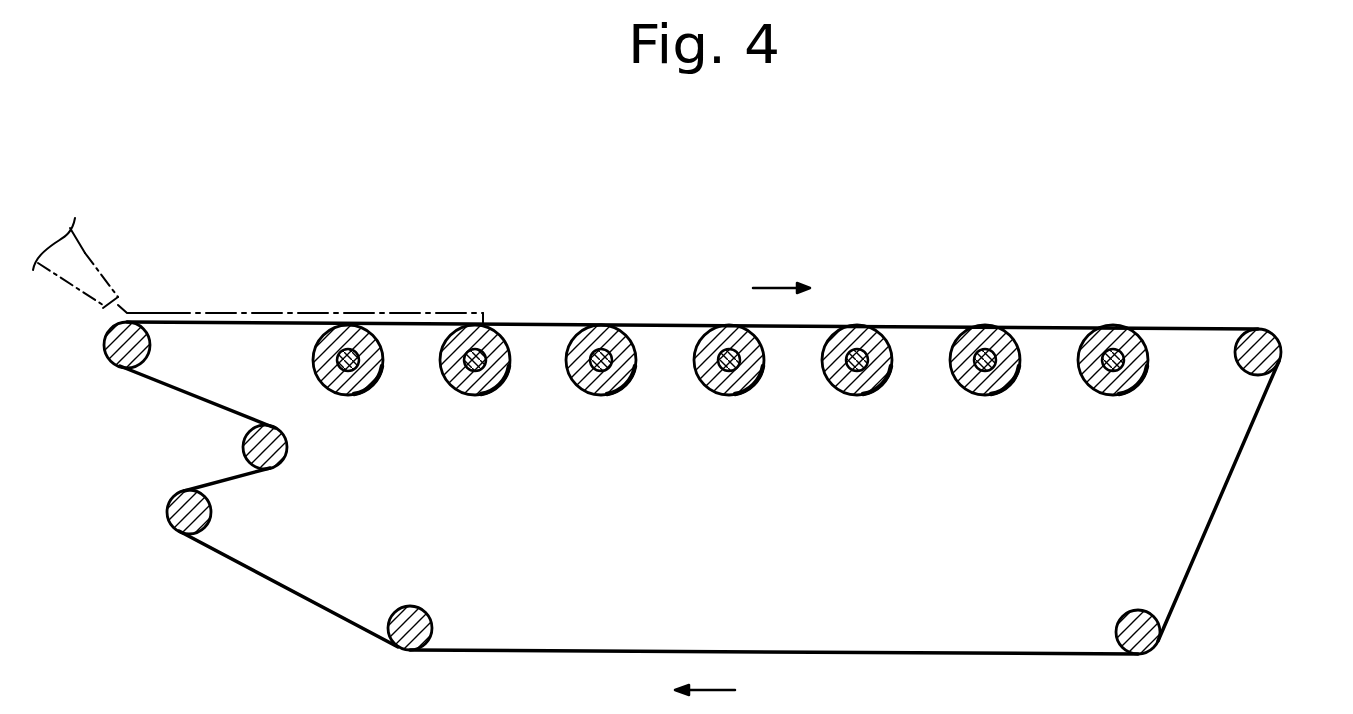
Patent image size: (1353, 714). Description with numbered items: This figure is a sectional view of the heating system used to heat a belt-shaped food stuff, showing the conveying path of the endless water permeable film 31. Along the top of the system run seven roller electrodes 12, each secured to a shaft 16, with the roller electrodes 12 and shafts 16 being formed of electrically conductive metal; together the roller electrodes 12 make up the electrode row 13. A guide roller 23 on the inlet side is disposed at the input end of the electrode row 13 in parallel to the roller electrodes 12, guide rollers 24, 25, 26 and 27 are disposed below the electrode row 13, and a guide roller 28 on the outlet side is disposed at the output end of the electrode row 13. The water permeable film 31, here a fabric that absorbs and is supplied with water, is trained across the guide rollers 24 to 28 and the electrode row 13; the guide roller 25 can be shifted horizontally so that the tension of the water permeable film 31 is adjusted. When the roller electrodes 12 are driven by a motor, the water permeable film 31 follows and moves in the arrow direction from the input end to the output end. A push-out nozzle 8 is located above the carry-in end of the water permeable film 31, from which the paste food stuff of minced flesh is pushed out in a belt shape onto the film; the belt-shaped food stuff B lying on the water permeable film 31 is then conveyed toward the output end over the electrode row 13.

The push-out nozzle 8 is at (85, 250).
The base plate B is at (240, 307).
The water permeable film 31 is at (652, 322).
The roller electrodes 12 is at (352, 378).
The shafts 16 is at (597, 372).
The electrode row 13 is at (630, 428).
The guide roller 23 is at (112, 363).
The guide roller 24 is at (286, 460).
The guide roller 25 is at (172, 520).
The guide roller 26 is at (427, 618).
The guide roller 27 is at (1137, 622).
The guide roller 28 is at (1280, 357).